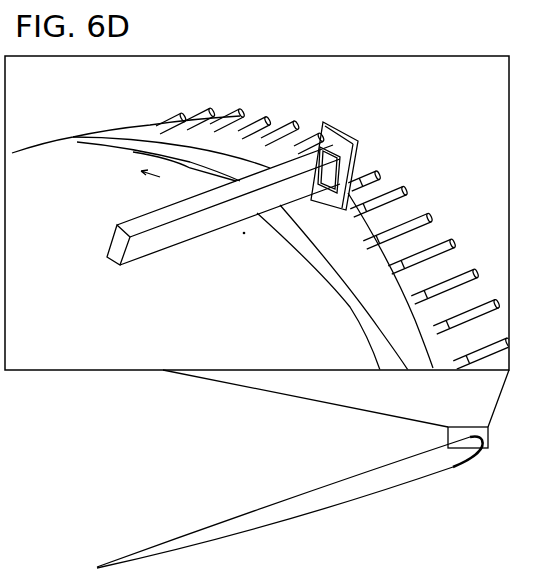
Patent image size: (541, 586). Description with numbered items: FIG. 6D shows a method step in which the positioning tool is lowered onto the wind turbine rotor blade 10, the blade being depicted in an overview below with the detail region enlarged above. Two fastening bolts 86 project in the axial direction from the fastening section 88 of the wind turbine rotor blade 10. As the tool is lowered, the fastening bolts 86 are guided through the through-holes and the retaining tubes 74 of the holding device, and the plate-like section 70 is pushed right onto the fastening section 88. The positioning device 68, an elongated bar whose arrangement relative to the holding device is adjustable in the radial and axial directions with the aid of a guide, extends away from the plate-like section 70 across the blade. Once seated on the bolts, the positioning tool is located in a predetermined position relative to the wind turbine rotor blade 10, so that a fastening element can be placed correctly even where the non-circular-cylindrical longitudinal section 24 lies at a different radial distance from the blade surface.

The wind turbine rotor blade 10 is at (272, 500).
The non-circular-cylindrical longitudinal section 24 is at (36, 177).
The positioning device 68 is at (158, 213).
The plate-like section 70 is at (337, 137).
The retaining tubes 74 is at (373, 207).
The fastening bolts 86 is at (452, 237).
The fastening section 88 is at (415, 282).